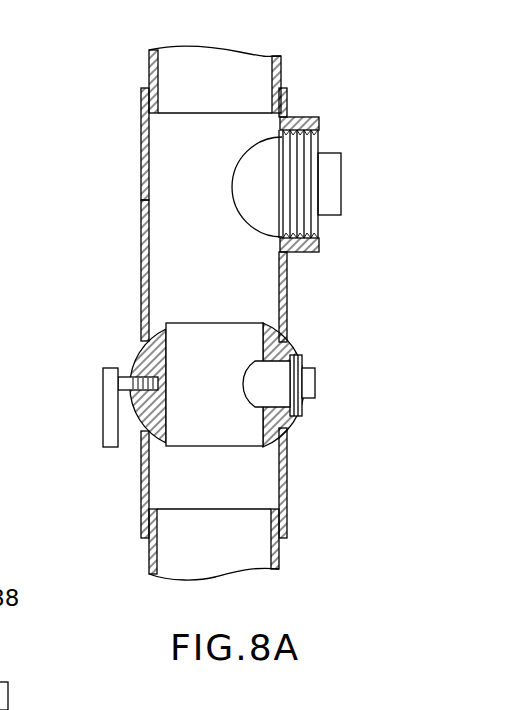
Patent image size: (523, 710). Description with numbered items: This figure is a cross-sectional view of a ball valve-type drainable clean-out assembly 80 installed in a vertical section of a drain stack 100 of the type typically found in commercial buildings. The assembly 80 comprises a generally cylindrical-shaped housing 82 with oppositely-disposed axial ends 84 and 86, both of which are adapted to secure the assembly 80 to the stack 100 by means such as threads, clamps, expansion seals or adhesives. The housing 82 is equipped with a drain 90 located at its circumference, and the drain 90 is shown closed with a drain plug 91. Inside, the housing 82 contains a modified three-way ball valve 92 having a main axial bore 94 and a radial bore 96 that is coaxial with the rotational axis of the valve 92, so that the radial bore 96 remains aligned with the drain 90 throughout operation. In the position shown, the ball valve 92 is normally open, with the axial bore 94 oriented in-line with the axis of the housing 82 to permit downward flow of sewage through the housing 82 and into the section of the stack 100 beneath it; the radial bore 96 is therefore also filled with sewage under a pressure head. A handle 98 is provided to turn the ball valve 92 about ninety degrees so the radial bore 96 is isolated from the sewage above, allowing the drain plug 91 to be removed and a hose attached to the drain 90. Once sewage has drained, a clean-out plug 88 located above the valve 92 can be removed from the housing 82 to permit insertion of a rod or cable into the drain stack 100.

The ball valve-type clean-out assembly 80 is at (102, 211).
The housing 82 is at (140, 283).
The axial end 84 is at (142, 125).
The axial end 86 is at (142, 488).
The clean-out plug 88 is at (307, 117).
The drain 90 is at (303, 405).
The drain plug 91 is at (312, 382).
The three-way ball valve 92 is at (133, 365).
The main axial bore 94 is at (207, 337).
The radial bore 96 is at (262, 385).
The handle 98 is at (107, 422).
The drain stack 100 is at (282, 68).